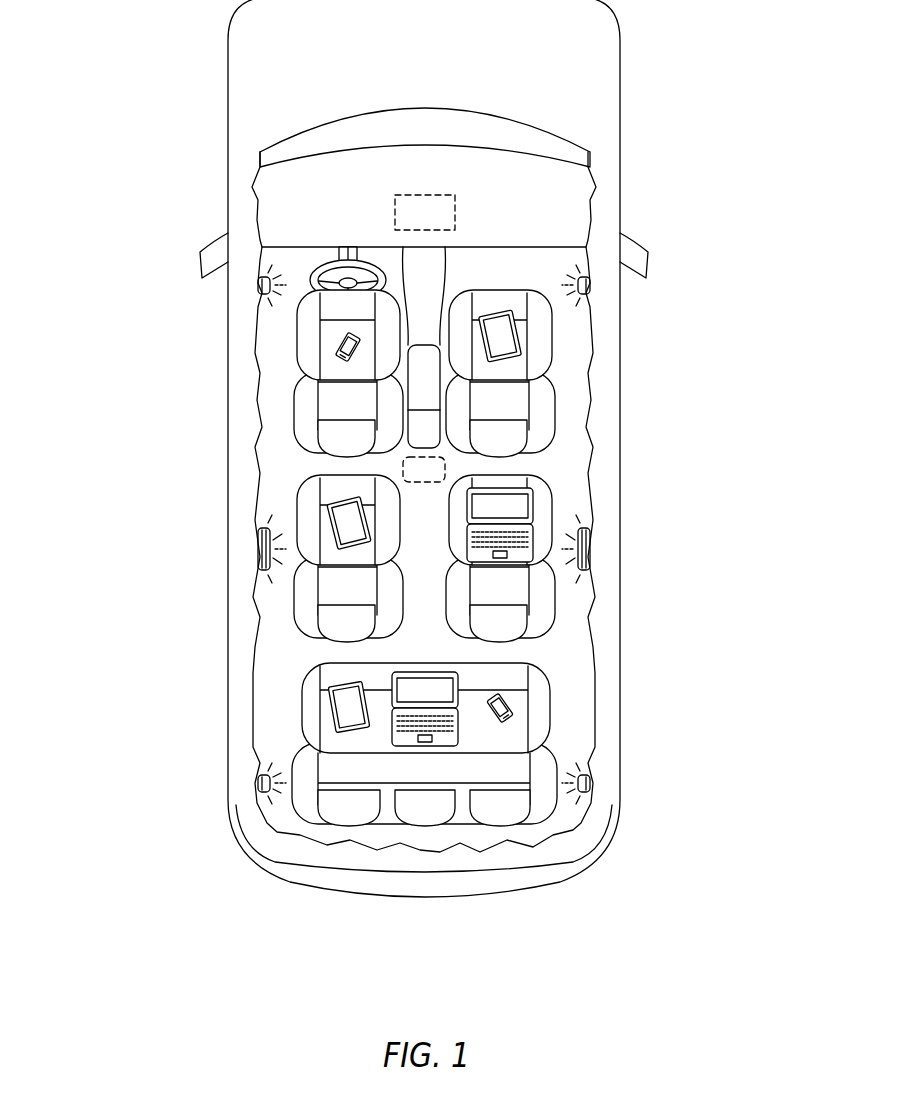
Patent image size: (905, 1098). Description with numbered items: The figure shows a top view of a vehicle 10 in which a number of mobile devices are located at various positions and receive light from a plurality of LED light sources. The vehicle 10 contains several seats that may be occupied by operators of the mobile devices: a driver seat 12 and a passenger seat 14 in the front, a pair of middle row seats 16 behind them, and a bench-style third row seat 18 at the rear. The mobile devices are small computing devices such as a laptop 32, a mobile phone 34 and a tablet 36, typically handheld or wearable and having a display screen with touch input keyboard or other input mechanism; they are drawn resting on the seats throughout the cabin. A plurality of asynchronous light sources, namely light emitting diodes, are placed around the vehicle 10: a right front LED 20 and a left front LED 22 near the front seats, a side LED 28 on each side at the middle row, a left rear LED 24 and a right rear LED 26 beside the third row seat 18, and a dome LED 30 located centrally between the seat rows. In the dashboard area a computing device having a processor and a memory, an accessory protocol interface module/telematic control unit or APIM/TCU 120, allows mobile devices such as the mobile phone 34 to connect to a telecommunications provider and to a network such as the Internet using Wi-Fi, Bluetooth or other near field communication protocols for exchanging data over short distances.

The vehicle 10 is at (620, 95).
The driver seat 12 is at (297, 392).
The passenger seat 14 is at (553, 395).
The middle row seat 16 is at (292, 598).
The third row seat 18 is at (302, 700).
The right front LED 20 is at (590, 286).
The left front LED 22 is at (258, 286).
The left rear LED 24 is at (258, 783).
The right rear LED 26 is at (593, 782).
The side LED 28 is at (257, 548).
The dome LED 30 is at (425, 483).
The laptop 32 is at (535, 499).
The mobile phone 34 is at (350, 334).
The tablet 36 is at (494, 313).
The APIM/TCU 120 is at (428, 195).